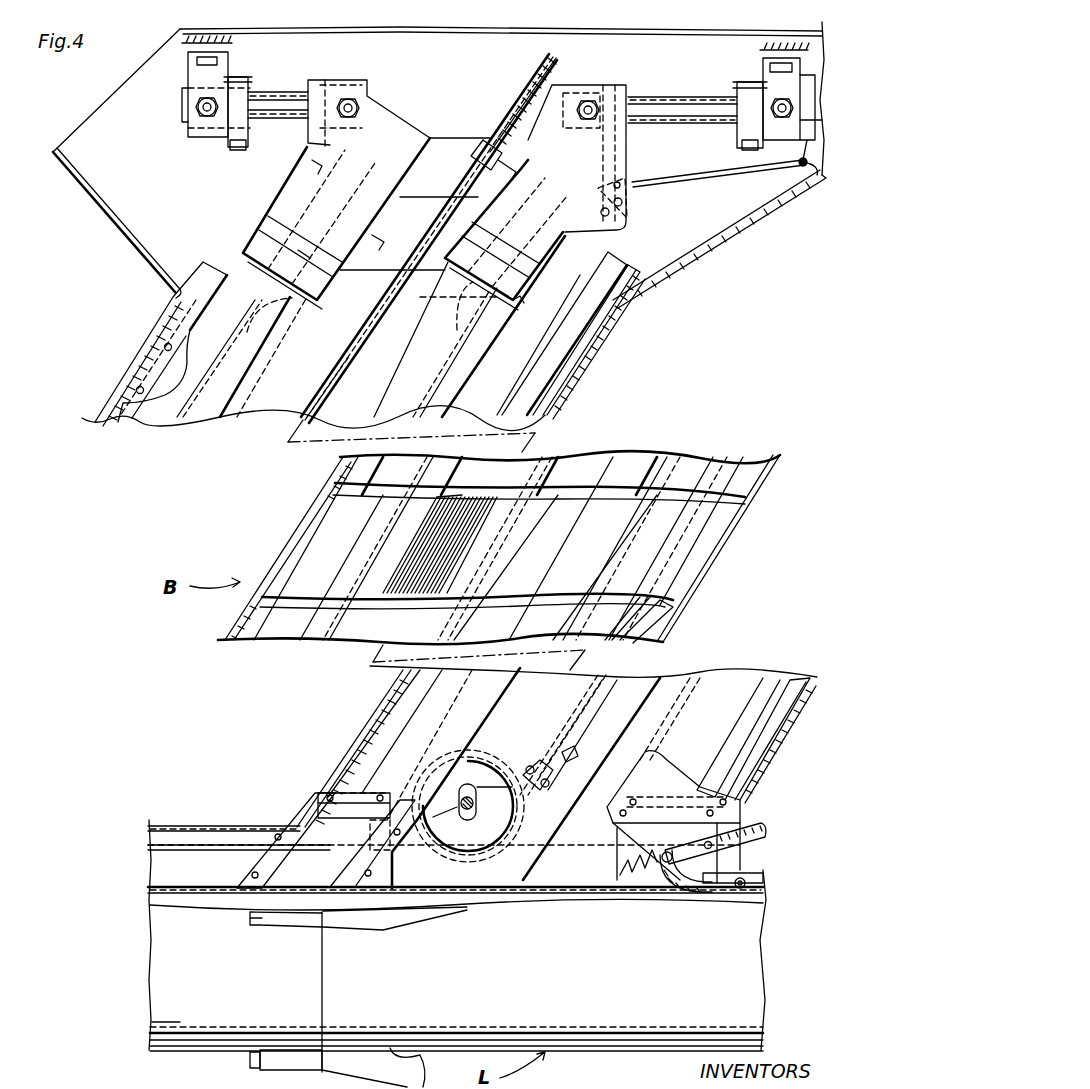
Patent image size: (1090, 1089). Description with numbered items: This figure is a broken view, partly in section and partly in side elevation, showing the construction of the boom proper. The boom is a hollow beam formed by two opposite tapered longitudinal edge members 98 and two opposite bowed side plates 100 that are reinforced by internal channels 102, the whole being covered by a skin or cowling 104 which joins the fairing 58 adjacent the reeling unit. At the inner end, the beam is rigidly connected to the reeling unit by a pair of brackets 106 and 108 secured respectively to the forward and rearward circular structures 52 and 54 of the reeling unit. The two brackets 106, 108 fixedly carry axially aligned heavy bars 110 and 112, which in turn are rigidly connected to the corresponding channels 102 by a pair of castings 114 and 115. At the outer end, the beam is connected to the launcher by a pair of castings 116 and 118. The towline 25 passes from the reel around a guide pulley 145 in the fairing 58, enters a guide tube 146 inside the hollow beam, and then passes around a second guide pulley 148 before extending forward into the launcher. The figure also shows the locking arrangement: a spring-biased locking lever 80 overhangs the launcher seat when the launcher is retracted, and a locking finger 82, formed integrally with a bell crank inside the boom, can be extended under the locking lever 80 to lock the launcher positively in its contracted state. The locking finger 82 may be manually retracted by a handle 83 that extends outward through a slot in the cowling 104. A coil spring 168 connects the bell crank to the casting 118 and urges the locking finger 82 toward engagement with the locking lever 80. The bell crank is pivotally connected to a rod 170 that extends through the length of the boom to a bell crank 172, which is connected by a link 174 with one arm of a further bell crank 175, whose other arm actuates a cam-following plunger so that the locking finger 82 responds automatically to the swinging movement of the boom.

The towline 25 is at (553, 57).
The forward circular structure 52 is at (232, 43).
The rearward circular structure 54 is at (760, 50).
The fairing 58 is at (722, 236).
The locking lever 80 is at (745, 872).
The locking finger 82 is at (690, 880).
The handle 83 is at (753, 823).
The longitudinal edge members 98 is at (192, 284).
The bowed side plates 100 is at (672, 465).
The internal channels 102 is at (268, 330).
The skin or cowling 104 is at (570, 366).
The bracket 106 is at (187, 80).
The bracket 108 is at (763, 66).
The heavy bar 110 is at (270, 92).
The heavy bar 112 is at (668, 97).
The casting 114 is at (405, 120).
The casting 115 is at (620, 162).
The casting 116 is at (316, 806).
The casting 118 is at (612, 878).
The guide pulley 145 is at (519, 105).
The guide tube 146 is at (378, 327).
The second guide pulley 148 is at (470, 757).
The coil spring 168 is at (643, 860).
The rod 170 is at (571, 270).
The bell crank 172 is at (628, 226).
The link 174 is at (683, 182).
The bell crank 175 is at (800, 167).